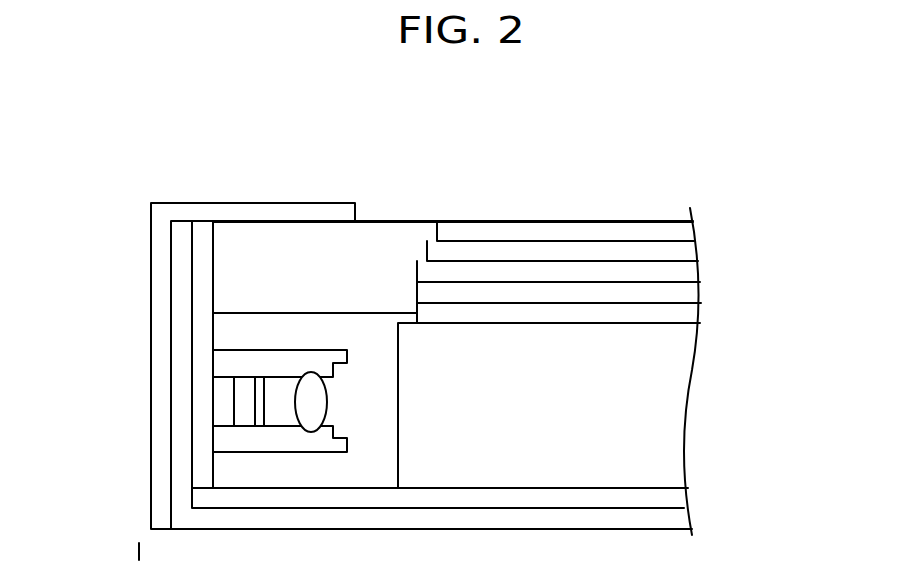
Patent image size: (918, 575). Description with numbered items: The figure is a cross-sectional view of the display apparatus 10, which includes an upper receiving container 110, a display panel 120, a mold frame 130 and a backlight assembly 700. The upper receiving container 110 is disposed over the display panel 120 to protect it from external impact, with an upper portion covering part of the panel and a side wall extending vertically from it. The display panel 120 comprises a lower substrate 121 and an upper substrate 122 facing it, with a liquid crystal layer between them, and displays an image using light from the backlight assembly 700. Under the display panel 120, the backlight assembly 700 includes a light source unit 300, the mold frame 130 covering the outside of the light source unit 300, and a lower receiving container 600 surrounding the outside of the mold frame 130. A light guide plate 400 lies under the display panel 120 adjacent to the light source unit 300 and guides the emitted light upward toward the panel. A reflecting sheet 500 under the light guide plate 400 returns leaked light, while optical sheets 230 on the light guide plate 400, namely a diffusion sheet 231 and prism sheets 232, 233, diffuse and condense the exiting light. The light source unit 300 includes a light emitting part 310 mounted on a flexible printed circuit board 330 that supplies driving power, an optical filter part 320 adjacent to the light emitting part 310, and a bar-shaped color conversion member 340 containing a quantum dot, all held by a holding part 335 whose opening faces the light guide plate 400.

The display apparatus 10 is at (688, 138).
The upper receiving container 110 is at (255, 210).
The mold frame 130 is at (378, 237).
The display panel 120 is at (762, 212).
The lower substrate 121 is at (686, 250).
The upper substrate 122 is at (685, 229).
The optical sheet assembly 230 is at (762, 262).
The diffusion sheet 231 is at (688, 318).
The prism sheet 232 is at (689, 297).
The prism sheet 233 is at (688, 276).
The light guide plate 400 is at (670, 393).
The reflecting sheet 500 is at (673, 497).
The lower receiving container 600 is at (673, 518).
The backlight assembly 700 is at (807, 275).
The light source unit 300 is at (84, 372).
The light emitting part 310 is at (223, 383).
The optical filter part 320 is at (260, 403).
The flexible printed circuit board 330 is at (205, 438).
The holding part 335 is at (223, 442).
The color conversion member 340 is at (305, 428).